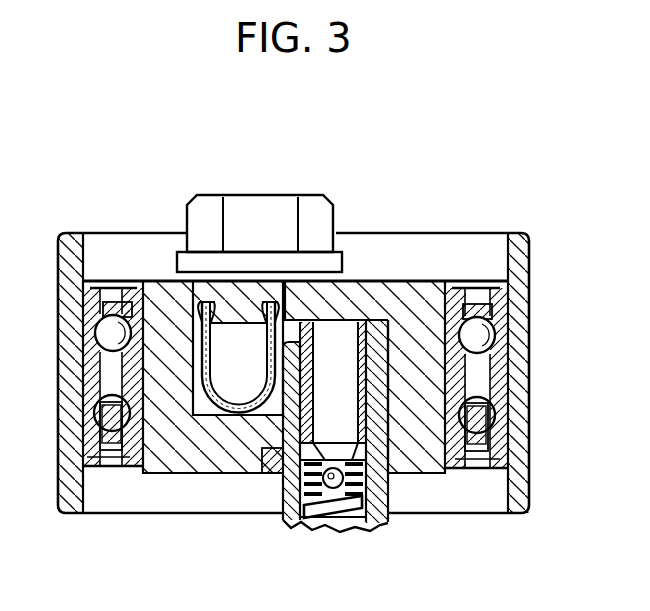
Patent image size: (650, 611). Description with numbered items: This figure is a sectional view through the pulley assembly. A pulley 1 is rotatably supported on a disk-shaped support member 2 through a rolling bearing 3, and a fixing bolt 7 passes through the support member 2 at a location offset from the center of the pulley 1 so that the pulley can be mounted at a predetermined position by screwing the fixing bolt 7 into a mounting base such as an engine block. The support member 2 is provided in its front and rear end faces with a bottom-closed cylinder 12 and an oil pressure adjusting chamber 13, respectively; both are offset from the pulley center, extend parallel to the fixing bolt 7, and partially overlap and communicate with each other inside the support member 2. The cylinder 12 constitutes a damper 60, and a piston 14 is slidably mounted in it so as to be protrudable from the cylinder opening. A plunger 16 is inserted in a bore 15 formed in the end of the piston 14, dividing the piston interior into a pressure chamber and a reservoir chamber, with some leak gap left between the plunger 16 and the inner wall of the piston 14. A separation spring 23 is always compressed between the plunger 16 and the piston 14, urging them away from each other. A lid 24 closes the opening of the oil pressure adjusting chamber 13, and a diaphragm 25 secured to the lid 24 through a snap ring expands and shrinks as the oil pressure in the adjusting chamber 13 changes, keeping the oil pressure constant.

The pulley 1 is at (520, 411).
The support member 2 is at (423, 307).
The rolling bearing 3 is at (478, 284).
The fixing bolt 7 is at (277, 218).
The cylinder 12 is at (382, 340).
The oil pressure adjusting chamber 13 is at (199, 412).
The piston 14 is at (395, 508).
The bore 15 is at (313, 357).
The plunger 16 is at (276, 474).
The separation spring 23 is at (334, 512).
The lid 24 is at (244, 292).
The diaphragm 25 is at (233, 417).
The damper 60 is at (394, 406).